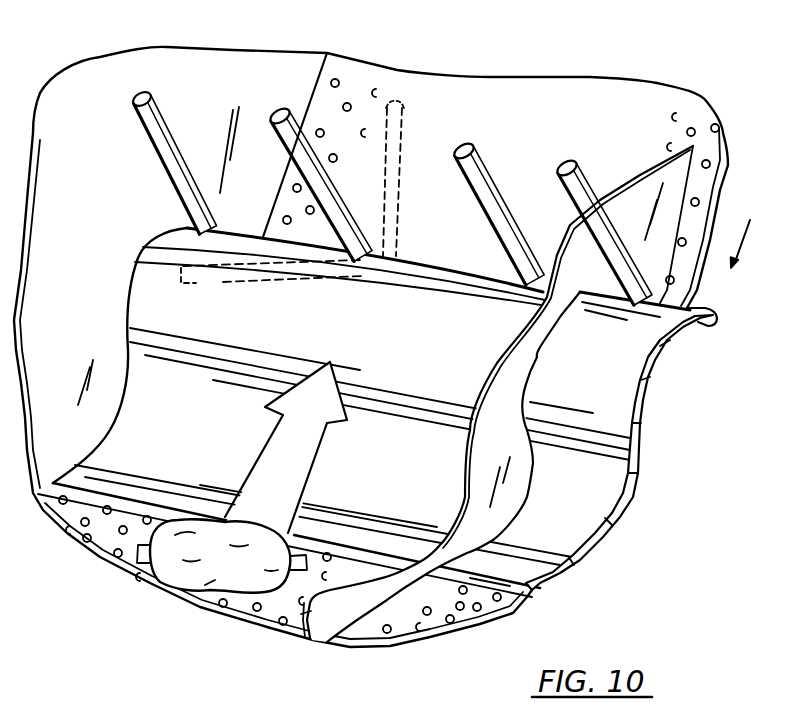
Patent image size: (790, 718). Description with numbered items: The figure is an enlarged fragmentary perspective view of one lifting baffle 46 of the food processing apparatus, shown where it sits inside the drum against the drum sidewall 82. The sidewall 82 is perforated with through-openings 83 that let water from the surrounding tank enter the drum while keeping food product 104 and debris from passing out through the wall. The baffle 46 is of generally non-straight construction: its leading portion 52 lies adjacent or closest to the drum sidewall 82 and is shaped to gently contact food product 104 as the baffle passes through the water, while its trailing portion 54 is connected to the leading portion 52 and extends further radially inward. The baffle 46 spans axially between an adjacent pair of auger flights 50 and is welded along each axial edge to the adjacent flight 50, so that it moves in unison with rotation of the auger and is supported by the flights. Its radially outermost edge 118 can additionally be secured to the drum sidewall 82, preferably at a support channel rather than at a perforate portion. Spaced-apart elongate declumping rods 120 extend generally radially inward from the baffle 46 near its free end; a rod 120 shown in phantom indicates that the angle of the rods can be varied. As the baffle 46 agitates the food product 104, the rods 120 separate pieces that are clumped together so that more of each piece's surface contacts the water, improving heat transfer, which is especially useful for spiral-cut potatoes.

The lifting baffle 46 is at (128, 300).
The auger flight 50 is at (286, 62).
The leading portion 52 is at (402, 470).
The trailing portion 54 is at (395, 340).
The drum sidewall 82 is at (418, 73).
The through-openings 83 is at (373, 75).
The food product 104 is at (167, 587).
The radially outermost edge 118 is at (538, 589).
The declumping rod 120 is at (273, 117).